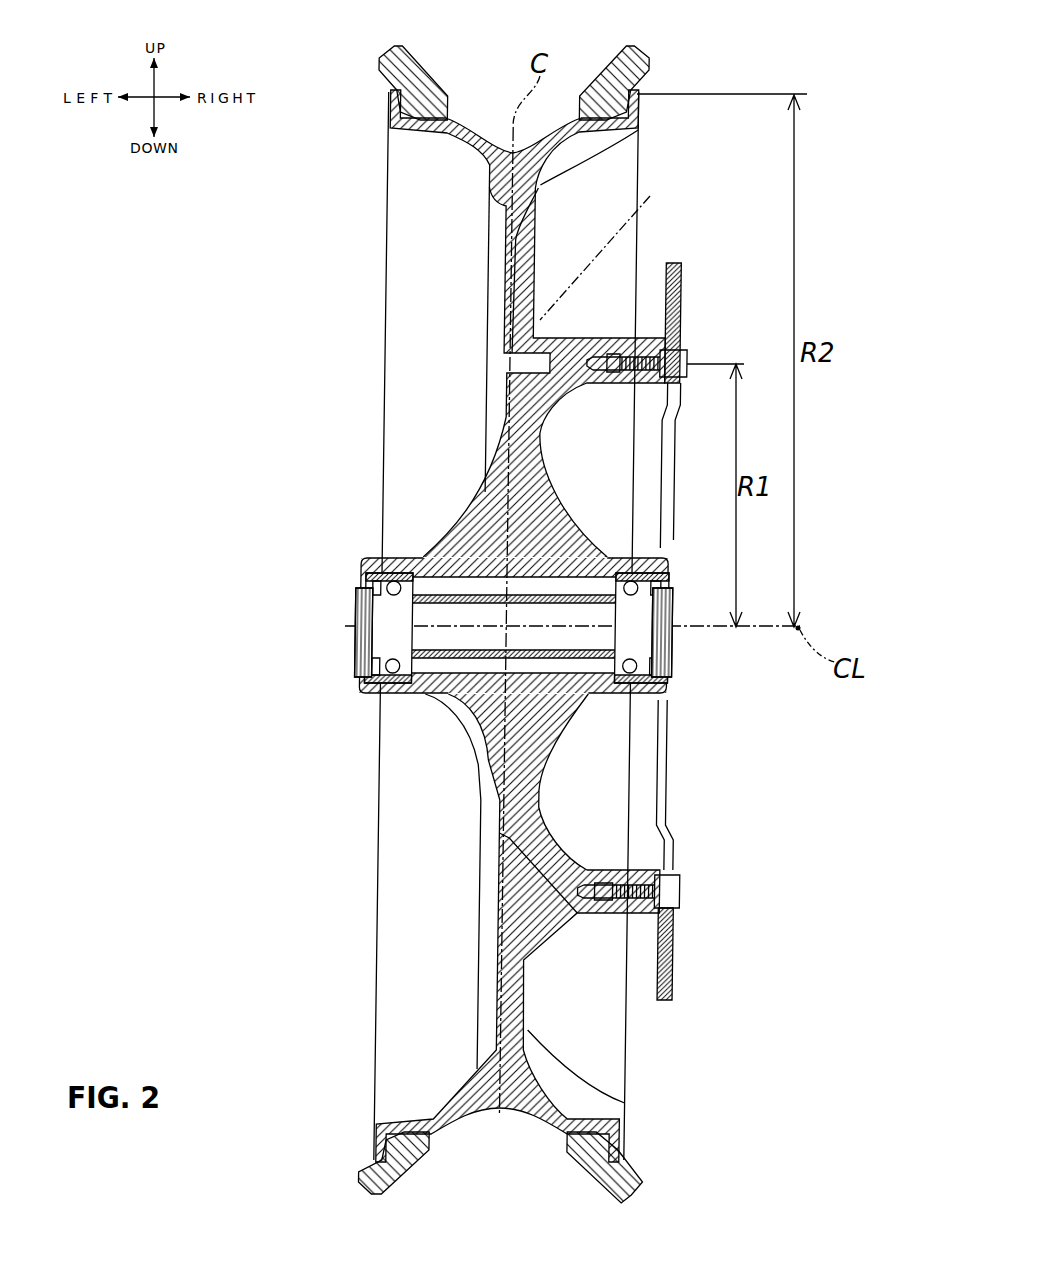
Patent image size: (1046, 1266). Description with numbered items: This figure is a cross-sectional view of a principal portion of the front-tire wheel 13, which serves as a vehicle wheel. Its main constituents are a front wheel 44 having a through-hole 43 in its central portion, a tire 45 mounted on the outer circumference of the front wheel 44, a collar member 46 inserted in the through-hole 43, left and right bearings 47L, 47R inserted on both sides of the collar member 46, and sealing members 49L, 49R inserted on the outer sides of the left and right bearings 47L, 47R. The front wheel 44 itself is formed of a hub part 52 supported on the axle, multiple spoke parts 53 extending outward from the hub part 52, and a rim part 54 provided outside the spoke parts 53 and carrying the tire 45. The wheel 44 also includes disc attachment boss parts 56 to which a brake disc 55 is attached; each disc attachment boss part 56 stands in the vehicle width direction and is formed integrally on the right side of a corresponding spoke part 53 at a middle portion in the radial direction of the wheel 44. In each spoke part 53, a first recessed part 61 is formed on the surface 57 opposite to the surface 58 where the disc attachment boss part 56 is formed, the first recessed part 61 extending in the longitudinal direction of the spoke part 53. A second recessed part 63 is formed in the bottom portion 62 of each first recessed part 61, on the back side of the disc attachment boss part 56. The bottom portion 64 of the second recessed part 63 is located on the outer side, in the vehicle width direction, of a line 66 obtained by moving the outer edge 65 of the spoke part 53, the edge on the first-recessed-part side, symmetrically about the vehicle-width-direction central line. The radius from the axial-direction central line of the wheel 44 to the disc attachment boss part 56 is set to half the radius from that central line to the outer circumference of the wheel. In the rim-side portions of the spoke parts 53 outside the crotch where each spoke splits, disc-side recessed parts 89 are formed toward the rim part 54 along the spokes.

The front-tire wheel 13 is at (712, 68).
The through-hole 43 is at (428, 583).
The front wheel 44 is at (484, 232).
The tire 45 is at (384, 73).
The collar member 46 is at (427, 598).
The left bearing 47L is at (380, 678).
The right bearing 47R is at (622, 685).
The left sealing member 49L is at (347, 660).
The right sealing member 49R is at (668, 672).
The hub part 52 is at (401, 692).
The spoke part 53 is at (492, 323).
The rim part 54 is at (385, 1140).
The brake disc 55 is at (675, 942).
The disc attachment boss part 56 is at (650, 336).
The surface opposite the boss 57 is at (466, 778).
The surface where the boss is formed 58 is at (580, 770).
The first recessed part 61 is at (497, 457).
The bottom portion of the first recessed part 62 is at (493, 423).
The second recessed part 63 is at (497, 360).
The bottom portion of the second recessed part 64 is at (493, 380).
The outer edge of the spoke part 65 is at (492, 278).
The line 66 is at (615, 241).
The disc-side recessed part 89 is at (520, 208).